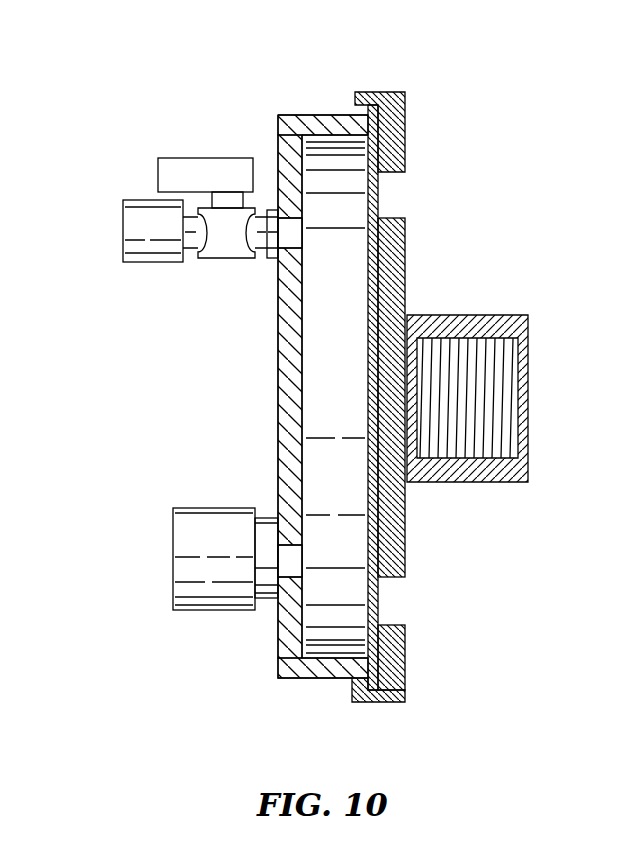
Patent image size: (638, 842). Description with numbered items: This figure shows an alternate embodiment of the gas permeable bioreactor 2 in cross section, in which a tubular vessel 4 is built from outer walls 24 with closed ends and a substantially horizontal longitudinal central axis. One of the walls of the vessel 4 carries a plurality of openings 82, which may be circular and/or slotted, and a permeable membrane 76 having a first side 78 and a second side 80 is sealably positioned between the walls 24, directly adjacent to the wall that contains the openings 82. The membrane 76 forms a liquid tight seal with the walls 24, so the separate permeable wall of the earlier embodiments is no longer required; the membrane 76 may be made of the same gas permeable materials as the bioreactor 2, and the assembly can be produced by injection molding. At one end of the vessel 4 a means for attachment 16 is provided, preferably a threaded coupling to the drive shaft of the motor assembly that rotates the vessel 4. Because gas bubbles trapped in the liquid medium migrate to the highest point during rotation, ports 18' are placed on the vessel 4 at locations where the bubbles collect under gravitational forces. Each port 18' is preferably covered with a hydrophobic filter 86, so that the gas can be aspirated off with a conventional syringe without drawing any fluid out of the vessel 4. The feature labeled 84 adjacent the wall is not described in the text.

The bioreactor 2 is at (261, 67).
The vessel 4 is at (342, 409).
The means for attachment 16 is at (500, 315).
The port 18' is at (230, 410).
The outer walls 24 is at (388, 92).
The permeable membrane 76 is at (365, 668).
The first side 78 is at (366, 114).
The second side 80 is at (380, 187).
The openings 82 is at (402, 598).
The outer wall 84 is at (299, 336).
The hydrophobic filter 86 is at (123, 226).